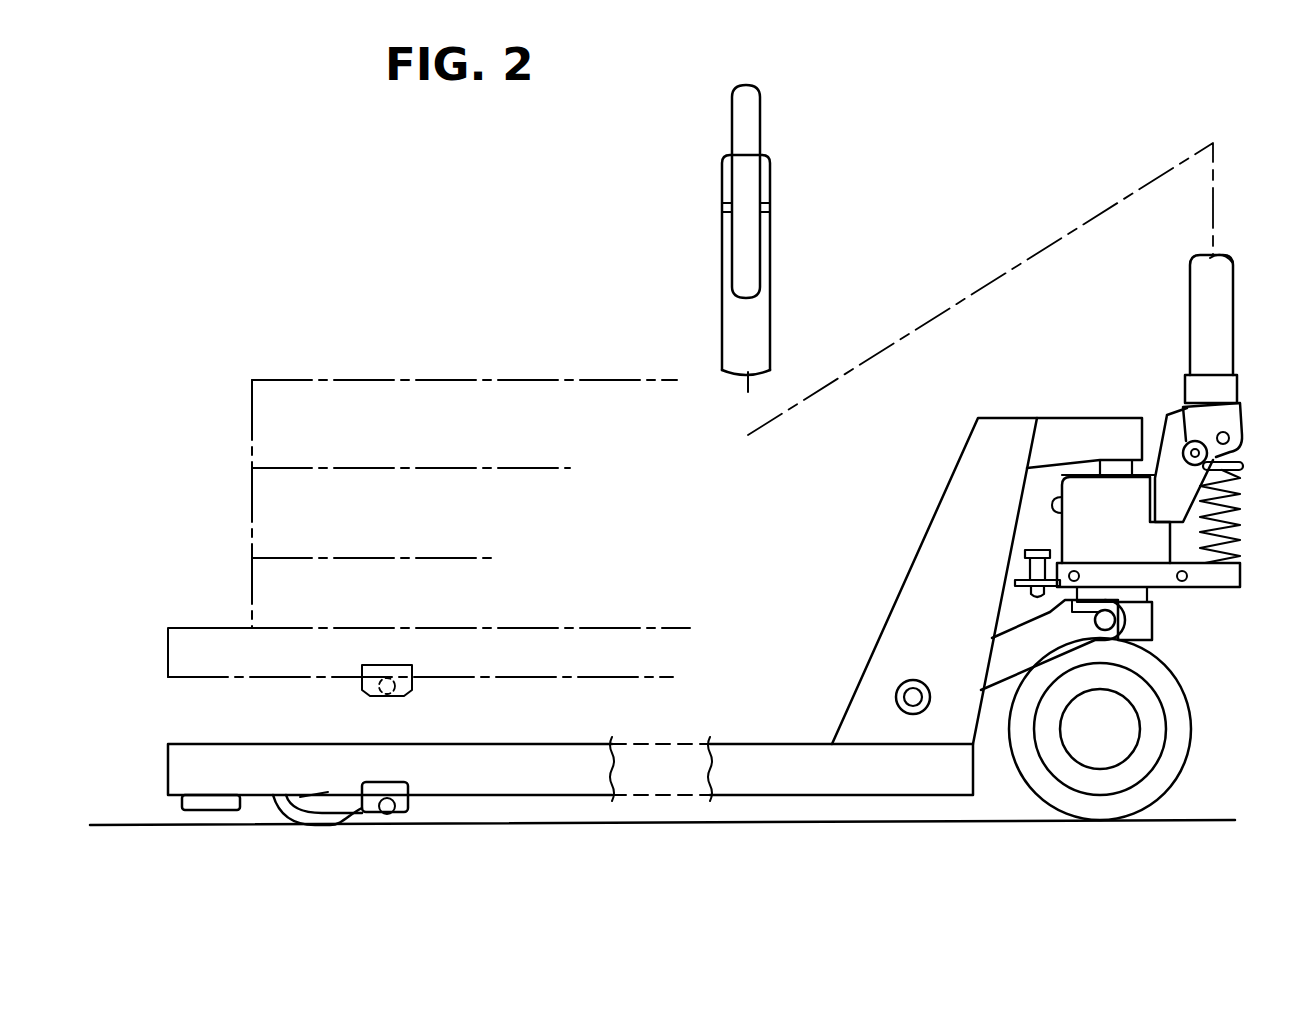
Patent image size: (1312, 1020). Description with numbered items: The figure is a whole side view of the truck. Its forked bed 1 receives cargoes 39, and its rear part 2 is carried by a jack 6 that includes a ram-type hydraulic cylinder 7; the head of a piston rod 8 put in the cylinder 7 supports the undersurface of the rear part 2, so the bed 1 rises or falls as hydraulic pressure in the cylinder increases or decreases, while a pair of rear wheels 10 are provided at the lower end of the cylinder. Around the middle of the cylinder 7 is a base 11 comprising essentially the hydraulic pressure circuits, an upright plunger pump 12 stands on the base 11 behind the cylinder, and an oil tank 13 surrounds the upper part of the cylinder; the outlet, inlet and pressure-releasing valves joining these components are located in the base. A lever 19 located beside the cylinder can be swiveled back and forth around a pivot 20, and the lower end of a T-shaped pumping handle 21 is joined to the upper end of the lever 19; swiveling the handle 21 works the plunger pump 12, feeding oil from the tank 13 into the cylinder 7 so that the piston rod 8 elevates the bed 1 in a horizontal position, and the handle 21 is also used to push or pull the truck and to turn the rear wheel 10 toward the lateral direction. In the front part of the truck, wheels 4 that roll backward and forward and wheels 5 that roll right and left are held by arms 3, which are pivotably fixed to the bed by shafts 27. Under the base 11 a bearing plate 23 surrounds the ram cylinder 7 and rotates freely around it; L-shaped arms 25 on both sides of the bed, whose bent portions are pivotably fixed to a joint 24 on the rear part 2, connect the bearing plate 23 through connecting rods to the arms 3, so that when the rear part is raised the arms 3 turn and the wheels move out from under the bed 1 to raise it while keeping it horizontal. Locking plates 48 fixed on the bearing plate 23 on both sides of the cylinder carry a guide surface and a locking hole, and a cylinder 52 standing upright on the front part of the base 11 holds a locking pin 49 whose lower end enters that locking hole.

The forked bed 1 is at (590, 745).
The rear part of the bed 2 is at (1007, 433).
The arm 3 is at (347, 810).
The wheel 4 is at (280, 824).
The wheel 5 is at (222, 810).
The jack 6 is at (1244, 599).
The ram-type hydraulic cylinder 7 is at (1122, 645).
The piston rod 8 is at (1114, 468).
The rear wheel 10 is at (1186, 720).
The base 11 is at (1242, 578).
The plunger pump 12 is at (1243, 510).
The oil tank 13 is at (1068, 513).
The lever 19 is at (1230, 414).
The pivot 20 is at (1188, 444).
The T-shaped pumping handle 21 is at (750, 113).
The bearing plate 23 is at (1153, 618).
The joint 24 is at (896, 697).
The L-shaped arm 25 is at (1003, 660).
The shaft 27 is at (394, 814).
The cargoes 39 is at (428, 380).
The locking plate 48 is at (1046, 612).
The locking pin 49 is at (1034, 548).
The cylinder 52 is at (1012, 566).